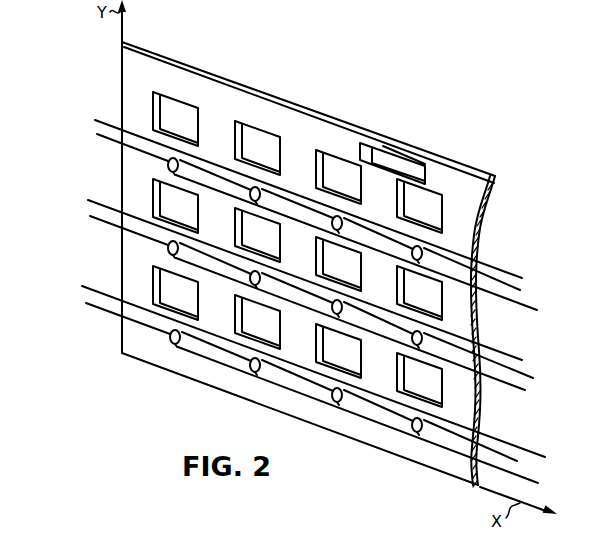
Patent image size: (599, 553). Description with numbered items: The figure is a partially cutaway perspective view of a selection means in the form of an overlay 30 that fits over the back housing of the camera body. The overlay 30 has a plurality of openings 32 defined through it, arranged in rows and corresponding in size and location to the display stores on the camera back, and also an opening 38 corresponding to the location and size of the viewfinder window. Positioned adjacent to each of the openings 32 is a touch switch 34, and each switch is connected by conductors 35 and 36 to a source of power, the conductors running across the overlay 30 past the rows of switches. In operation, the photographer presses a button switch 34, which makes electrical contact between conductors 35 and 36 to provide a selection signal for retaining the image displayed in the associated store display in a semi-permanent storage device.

The overlay 30 is at (264, 95).
The openings 32 is at (153, 117).
The touch switch 34 is at (167, 164).
The conductors 35 is at (506, 305).
The conductors 36 is at (104, 122).
The opening 38 is at (374, 145).